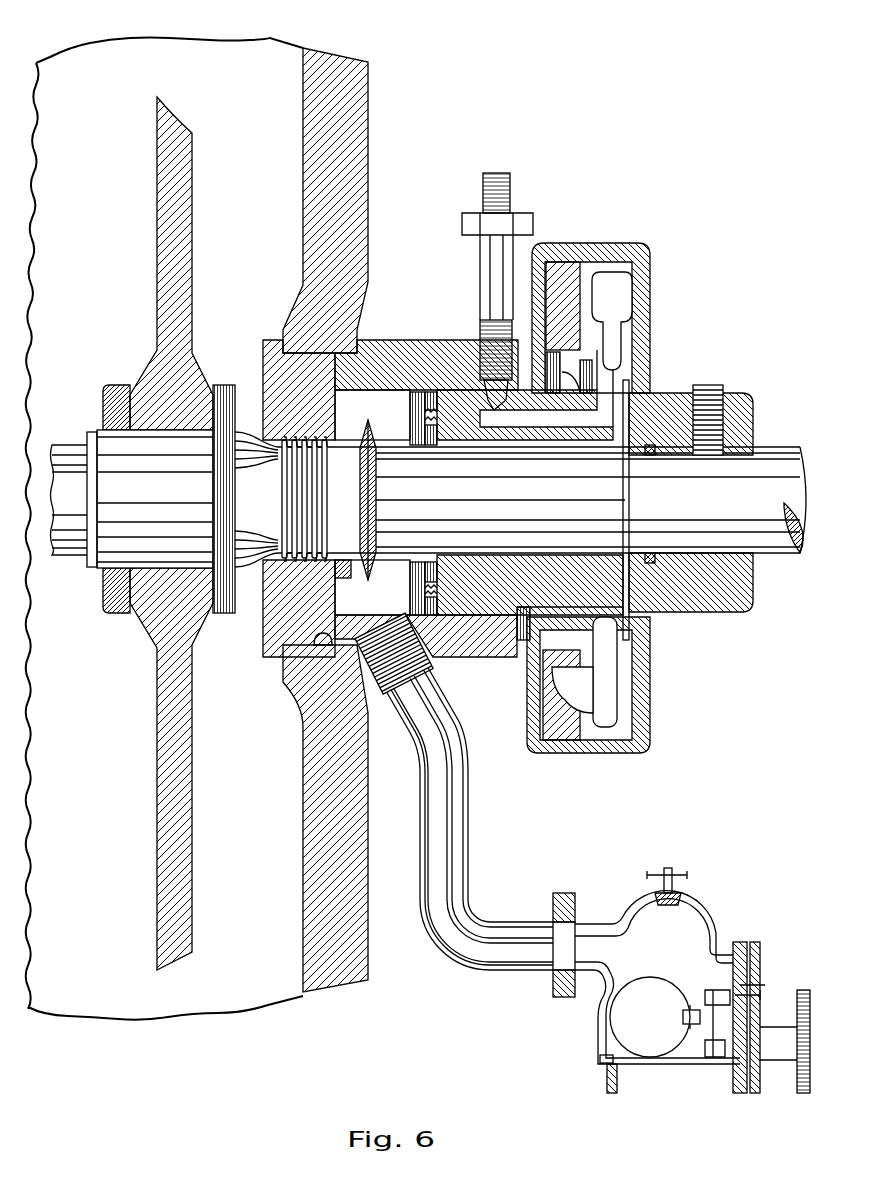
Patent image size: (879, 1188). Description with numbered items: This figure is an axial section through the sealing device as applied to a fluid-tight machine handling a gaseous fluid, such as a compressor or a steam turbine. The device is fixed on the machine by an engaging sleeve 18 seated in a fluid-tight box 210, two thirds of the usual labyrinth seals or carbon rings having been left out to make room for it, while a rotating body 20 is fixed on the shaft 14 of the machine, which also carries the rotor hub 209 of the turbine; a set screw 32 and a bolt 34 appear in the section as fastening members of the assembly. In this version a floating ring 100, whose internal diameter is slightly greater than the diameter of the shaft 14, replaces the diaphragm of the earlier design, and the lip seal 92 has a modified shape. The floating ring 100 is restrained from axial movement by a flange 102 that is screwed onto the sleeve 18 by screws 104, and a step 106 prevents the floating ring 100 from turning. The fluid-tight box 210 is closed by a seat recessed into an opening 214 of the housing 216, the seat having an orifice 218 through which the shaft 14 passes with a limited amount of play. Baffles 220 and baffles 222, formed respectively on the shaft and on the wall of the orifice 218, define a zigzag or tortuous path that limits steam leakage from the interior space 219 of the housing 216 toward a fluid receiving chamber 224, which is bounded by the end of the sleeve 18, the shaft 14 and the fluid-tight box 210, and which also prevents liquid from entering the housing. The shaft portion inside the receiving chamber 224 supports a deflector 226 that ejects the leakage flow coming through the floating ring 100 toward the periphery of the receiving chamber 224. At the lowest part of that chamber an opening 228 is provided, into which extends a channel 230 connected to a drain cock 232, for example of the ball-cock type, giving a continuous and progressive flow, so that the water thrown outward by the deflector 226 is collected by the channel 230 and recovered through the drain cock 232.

The shaft 14 is at (64, 507).
The sleeve 18 is at (460, 428).
The rotating body 20 is at (611, 236).
The set screw 32 is at (620, 447).
The bolt 34 is at (490, 282).
The lip seal 92 is at (540, 660).
The floating ring 100 is at (438, 442).
The flange 102 is at (407, 425).
The screws 104 is at (393, 390).
The step 106 is at (410, 584).
The rotor hub 209 is at (163, 637).
The fluid-tight box 210 is at (317, 367).
The opening 214 is at (320, 640).
The housing 216 is at (314, 843).
The orifice 218 is at (262, 437).
The interior space 219 is at (262, 179).
The baffles 220 is at (252, 598).
The baffles 222 is at (307, 437).
The fluid receiving chamber 224 is at (348, 568).
The deflector 226 is at (376, 503).
The opening 228 is at (393, 706).
The channel 230 is at (448, 820).
The drain cock 232 is at (590, 950).